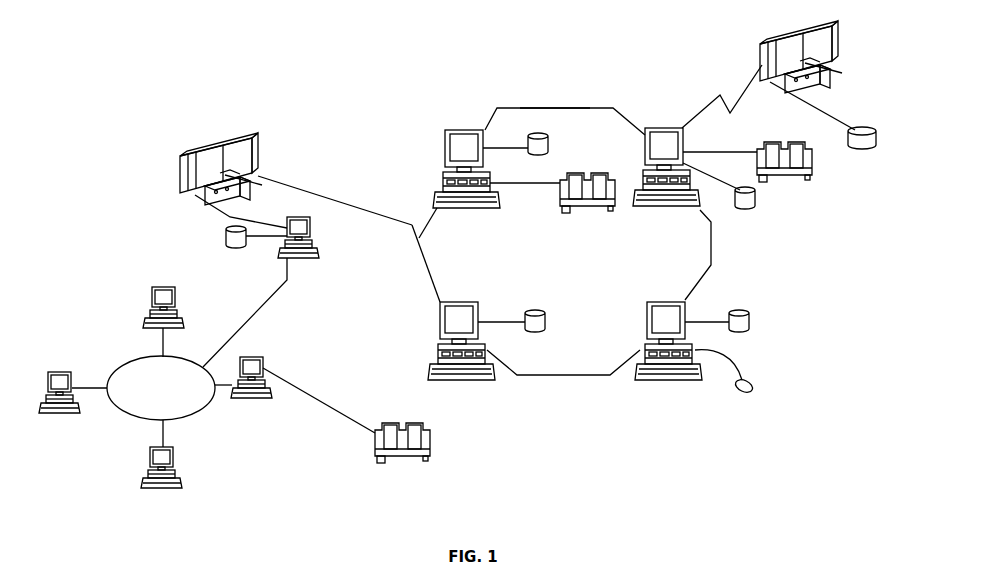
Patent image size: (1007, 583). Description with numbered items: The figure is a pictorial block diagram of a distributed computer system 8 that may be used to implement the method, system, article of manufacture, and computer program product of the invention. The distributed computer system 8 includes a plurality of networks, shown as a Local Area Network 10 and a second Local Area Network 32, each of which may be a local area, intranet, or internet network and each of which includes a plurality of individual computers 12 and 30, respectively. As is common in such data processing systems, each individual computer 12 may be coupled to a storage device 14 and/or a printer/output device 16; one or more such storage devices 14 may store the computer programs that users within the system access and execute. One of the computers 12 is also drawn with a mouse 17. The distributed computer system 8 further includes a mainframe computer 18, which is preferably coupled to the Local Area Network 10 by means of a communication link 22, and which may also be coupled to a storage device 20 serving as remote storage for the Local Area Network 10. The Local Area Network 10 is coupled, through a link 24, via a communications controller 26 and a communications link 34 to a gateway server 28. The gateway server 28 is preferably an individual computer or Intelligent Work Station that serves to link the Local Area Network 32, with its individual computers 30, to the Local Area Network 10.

The distributed computer system 8 is at (534, 109).
The local area network 10 is at (558, 377).
The individual computer 12 is at (455, 132).
The storage device 14 is at (548, 147).
The printer/output device 16 is at (587, 174).
The mouse 17 is at (750, 388).
The mainframe computer 18 is at (802, 35).
The storage device 20 is at (871, 132).
The communication link 22 is at (750, 80).
The communications link 24 is at (338, 203).
The communications controller 26 is at (253, 138).
The gateway server 28 is at (297, 220).
The individual computer 30 is at (160, 289).
The local area network 32 is at (123, 418).
The communications link 34 is at (205, 205).